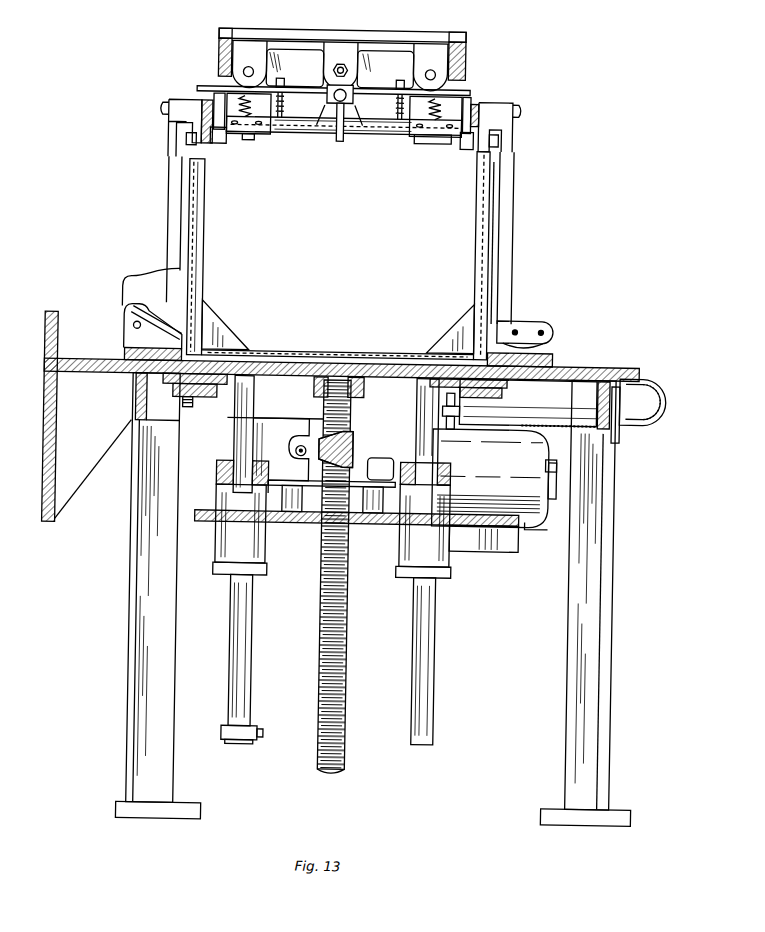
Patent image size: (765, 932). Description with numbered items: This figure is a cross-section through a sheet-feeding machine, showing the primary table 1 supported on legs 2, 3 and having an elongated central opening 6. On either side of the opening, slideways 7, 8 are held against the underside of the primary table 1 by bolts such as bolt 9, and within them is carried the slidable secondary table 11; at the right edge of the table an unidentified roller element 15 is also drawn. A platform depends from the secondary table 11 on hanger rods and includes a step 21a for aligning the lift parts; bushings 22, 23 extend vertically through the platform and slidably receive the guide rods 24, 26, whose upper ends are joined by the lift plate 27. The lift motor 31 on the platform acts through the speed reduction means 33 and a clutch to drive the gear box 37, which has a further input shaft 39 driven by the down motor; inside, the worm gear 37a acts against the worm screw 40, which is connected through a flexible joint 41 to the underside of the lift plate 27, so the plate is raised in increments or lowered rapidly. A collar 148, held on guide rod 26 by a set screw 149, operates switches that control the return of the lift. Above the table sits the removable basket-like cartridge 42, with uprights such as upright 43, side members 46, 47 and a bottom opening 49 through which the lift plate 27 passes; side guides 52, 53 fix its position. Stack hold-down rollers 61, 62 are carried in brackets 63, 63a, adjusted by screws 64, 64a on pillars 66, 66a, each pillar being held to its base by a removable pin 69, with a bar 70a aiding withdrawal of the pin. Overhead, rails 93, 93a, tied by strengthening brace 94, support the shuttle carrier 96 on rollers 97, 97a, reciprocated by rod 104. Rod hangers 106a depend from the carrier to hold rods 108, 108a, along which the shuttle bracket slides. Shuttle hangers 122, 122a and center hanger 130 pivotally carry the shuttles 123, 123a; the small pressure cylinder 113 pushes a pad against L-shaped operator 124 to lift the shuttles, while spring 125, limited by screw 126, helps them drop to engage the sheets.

The primary table 1 is at (603, 364).
The leg 2 is at (598, 604).
The leg 3 is at (160, 634).
The elongated central opening 6 is at (388, 352).
The slideway 7 is at (168, 391).
The slideway 8 is at (500, 392).
The bolt 9 is at (187, 410).
The secondary table 11 is at (452, 416).
The roller 15 is at (662, 400).
The step 21a is at (512, 548).
The bushing 22 is at (450, 566).
The bushing 23 is at (268, 573).
The guide rod 24 is at (437, 632).
The guide rod 26 is at (254, 641).
The lift plate 27 is at (290, 365).
The lift motor 31 is at (527, 526).
The speed reduction means 33 is at (257, 432).
The gear box 37 is at (312, 432).
The worm gear 37a is at (354, 448).
The input shaft 39 is at (299, 446).
The worm screw 40 is at (350, 673).
The flexible joint 41 is at (360, 393).
The cartridge 42 is at (484, 206).
The upright 43 is at (199, 192).
The side member 46 is at (485, 248).
The side member 47 is at (194, 236).
The opening 49 is at (460, 345).
The side guide 52 is at (545, 355).
The side guide 53 is at (122, 352).
The stack hold-down roller 61 is at (462, 148).
The stack hold-down roller 62 is at (208, 146).
The bracket 63 is at (496, 121).
The bracket 63a is at (168, 103).
The screw 64 is at (514, 110).
The screw 64a is at (154, 111).
The pillar 66 is at (508, 213).
The pillar 66a is at (168, 210).
The removable pin 69 is at (512, 326).
The bar 70a is at (158, 312).
The rail 93 is at (458, 66).
The rail 93a is at (213, 65).
The strengthening brace 94 is at (294, 42).
The shuttle carrier 96 is at (406, 43).
The roller 97 is at (441, 50).
The roller 97a is at (213, 40).
The rod 104 is at (334, 65).
The rod hanger 106a is at (259, 63).
The rod 108 is at (418, 73).
The rod 108a is at (236, 74).
The small pressure cylinder 113 is at (341, 93).
The shuttle hanger 122 is at (468, 115).
The shuttle hanger 122a is at (200, 104).
The shuttle 123 is at (437, 142).
The shuttle 123a is at (255, 137).
The L-shaped operator 124 is at (347, 119).
The spring 125 is at (422, 143).
The screw 126 is at (392, 121).
The center hanger 130 is at (334, 142).
The collar 148 is at (252, 746).
The set screw 149 is at (264, 731).